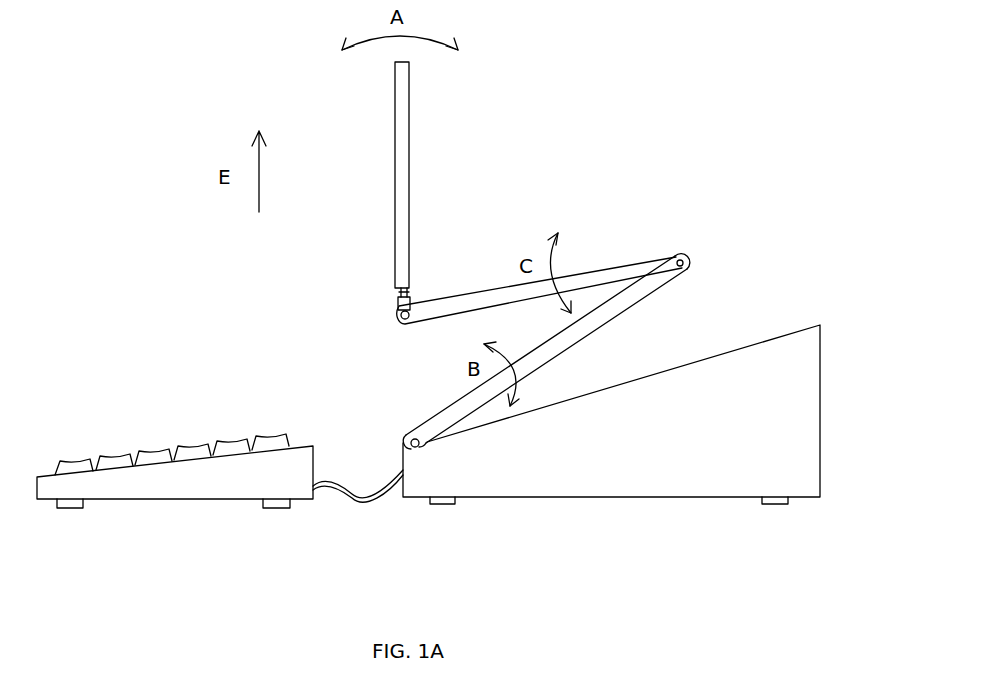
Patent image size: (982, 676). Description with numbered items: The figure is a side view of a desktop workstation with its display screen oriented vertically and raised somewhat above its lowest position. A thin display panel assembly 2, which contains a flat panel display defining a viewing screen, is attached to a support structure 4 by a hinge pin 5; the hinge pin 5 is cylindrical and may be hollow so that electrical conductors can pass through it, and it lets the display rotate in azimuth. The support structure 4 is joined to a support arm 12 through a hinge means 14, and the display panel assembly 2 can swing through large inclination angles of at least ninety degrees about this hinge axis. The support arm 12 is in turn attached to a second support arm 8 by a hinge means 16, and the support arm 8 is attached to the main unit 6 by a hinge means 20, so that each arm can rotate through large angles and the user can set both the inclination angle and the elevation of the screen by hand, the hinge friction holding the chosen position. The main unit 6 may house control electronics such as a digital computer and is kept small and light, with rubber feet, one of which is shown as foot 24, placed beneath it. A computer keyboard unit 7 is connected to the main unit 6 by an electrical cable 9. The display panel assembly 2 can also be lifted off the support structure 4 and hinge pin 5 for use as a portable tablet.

The display panel assembly 2 is at (398, 160).
The support structure 4 is at (398, 303).
The hinge pin 5 is at (400, 293).
The main unit 6 is at (803, 425).
The computer keyboard unit 7 is at (128, 490).
The support arm 8 is at (558, 348).
The electrical cable 9 is at (330, 486).
The support arm 12 is at (448, 297).
The hinge means 14 is at (401, 322).
The hinge means 16 is at (681, 258).
The hinge means 20 is at (409, 440).
The foot 24 is at (779, 504).